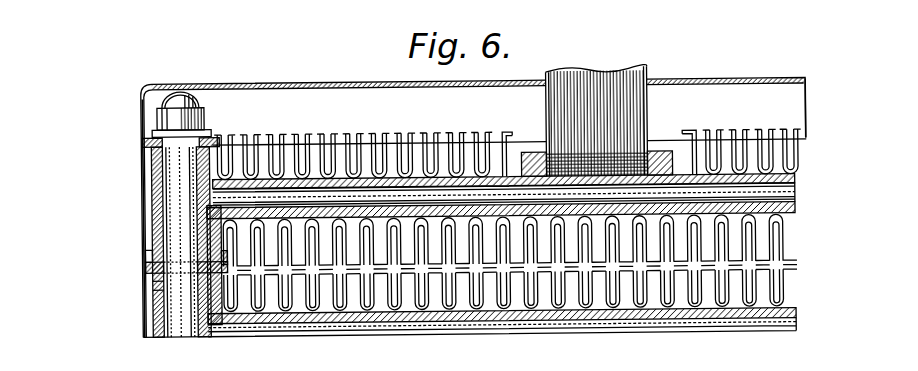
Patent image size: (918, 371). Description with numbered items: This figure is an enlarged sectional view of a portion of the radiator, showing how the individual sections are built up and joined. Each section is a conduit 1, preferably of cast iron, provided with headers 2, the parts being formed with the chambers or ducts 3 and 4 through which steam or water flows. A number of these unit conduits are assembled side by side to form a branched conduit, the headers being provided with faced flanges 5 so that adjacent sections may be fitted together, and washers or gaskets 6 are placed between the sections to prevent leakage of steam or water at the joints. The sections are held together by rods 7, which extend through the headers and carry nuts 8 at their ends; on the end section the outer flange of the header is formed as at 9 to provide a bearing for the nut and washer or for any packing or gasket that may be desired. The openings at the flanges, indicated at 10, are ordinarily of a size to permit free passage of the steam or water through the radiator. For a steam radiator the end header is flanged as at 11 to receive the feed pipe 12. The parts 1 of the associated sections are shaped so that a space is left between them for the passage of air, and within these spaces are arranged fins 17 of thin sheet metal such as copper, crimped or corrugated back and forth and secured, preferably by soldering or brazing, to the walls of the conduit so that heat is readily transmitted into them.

The conduit 1 is at (341, 146).
The header 2 is at (152, 192).
The chamber or duct 3 is at (285, 150).
The chamber or duct 4 is at (165, 216).
The faced flange 5 is at (150, 253).
The washer or gasket 6 is at (160, 267).
The rod 7 is at (178, 165).
The nut 8 is at (172, 108).
The bearing for nut and washer 9 is at (145, 138).
The opening at flange 10 is at (165, 288).
The flange for feed pipe 11 is at (662, 155).
The feed pipe 12 is at (603, 83).
The fin 17 is at (100, 263).